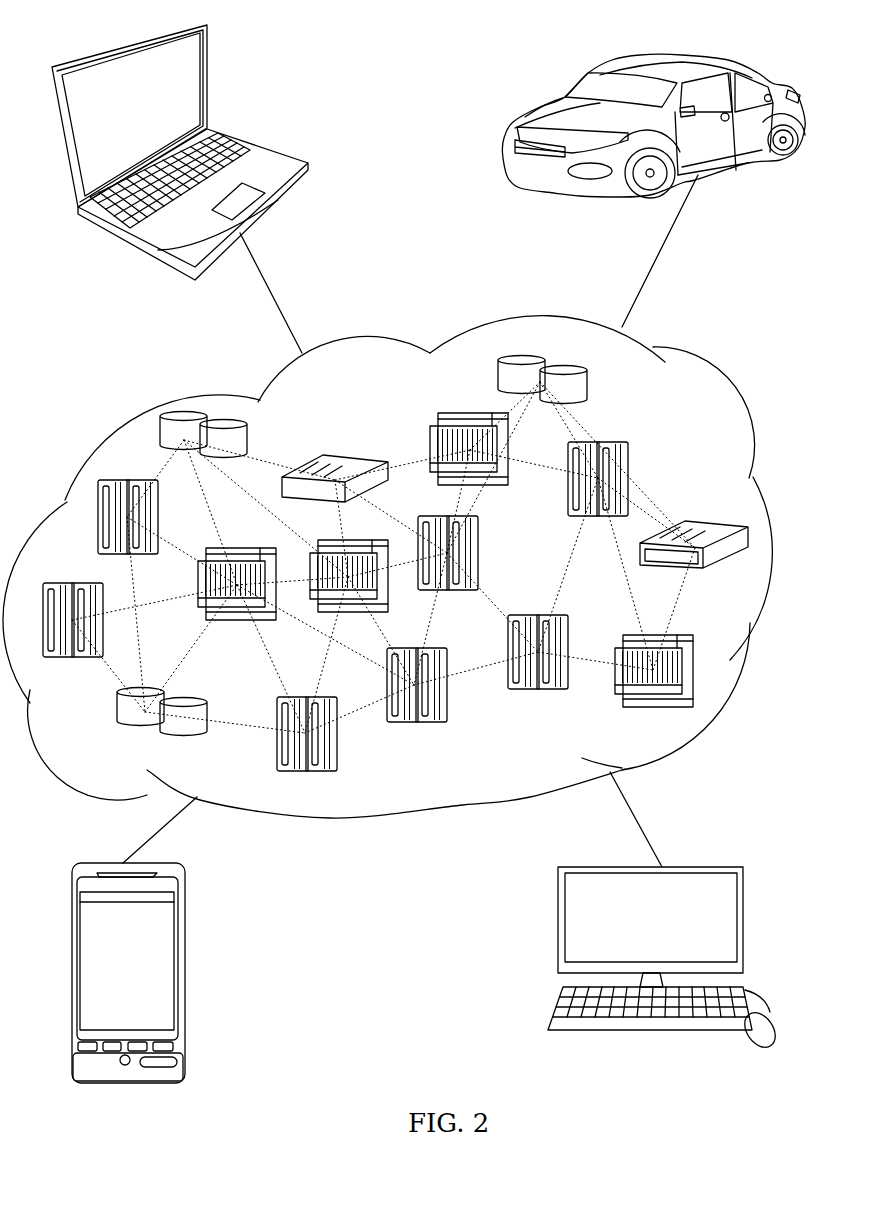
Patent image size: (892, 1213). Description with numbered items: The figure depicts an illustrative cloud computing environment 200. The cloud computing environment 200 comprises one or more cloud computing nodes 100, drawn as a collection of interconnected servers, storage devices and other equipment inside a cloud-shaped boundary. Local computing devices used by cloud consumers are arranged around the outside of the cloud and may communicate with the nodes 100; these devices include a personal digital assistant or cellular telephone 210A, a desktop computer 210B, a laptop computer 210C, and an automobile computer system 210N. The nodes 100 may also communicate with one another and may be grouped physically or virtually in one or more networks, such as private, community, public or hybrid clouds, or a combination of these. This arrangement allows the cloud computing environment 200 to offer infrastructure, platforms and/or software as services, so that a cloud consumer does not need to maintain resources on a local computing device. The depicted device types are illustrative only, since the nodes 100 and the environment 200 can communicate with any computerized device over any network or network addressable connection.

The cloud computing node 100 is at (721, 517).
The cloud computing environment 200 is at (727, 371).
The personal digital assistant (PDA) or cellular telephone 210A is at (220, 865).
The desktop computer 210B is at (783, 864).
The laptop computer 210C is at (255, 152).
The automobile computer system 210N is at (800, 46).